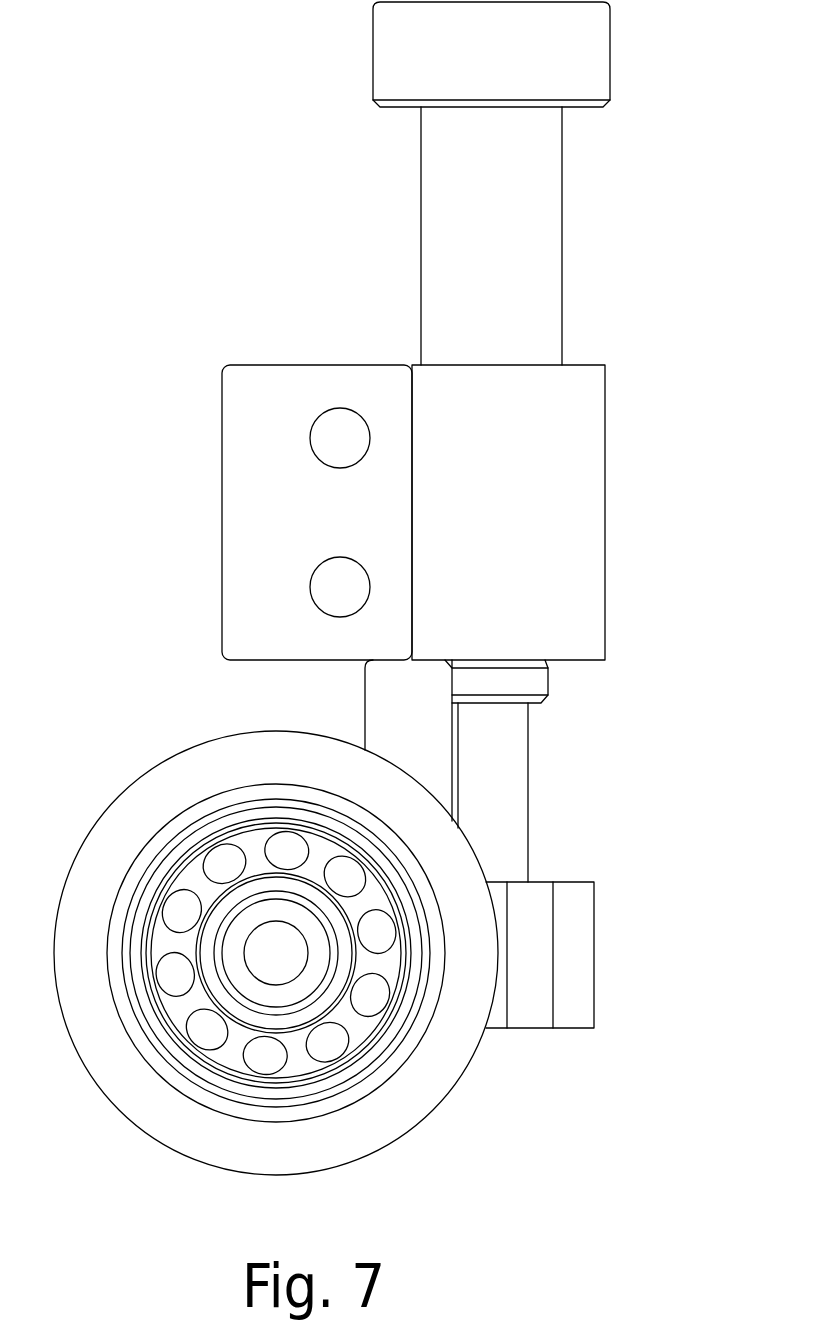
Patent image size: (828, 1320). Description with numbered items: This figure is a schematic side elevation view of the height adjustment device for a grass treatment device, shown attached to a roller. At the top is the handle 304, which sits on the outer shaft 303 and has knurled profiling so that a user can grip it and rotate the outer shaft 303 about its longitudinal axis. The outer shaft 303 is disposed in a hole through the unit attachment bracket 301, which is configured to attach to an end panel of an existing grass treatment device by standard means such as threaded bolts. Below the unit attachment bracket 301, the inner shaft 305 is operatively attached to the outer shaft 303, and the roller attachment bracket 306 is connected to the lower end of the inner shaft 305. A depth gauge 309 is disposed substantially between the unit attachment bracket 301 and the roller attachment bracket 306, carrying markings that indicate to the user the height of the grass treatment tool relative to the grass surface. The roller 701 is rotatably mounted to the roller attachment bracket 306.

The handle 304 is at (615, 47).
The outer shaft 303 is at (562, 233).
The unit attachment bracket 301 is at (605, 422).
The depth gauge 309 is at (365, 695).
The inner shaft 305 is at (528, 752).
The roller attachment bracket 306 is at (594, 935).
The roller 701 is at (470, 1057).